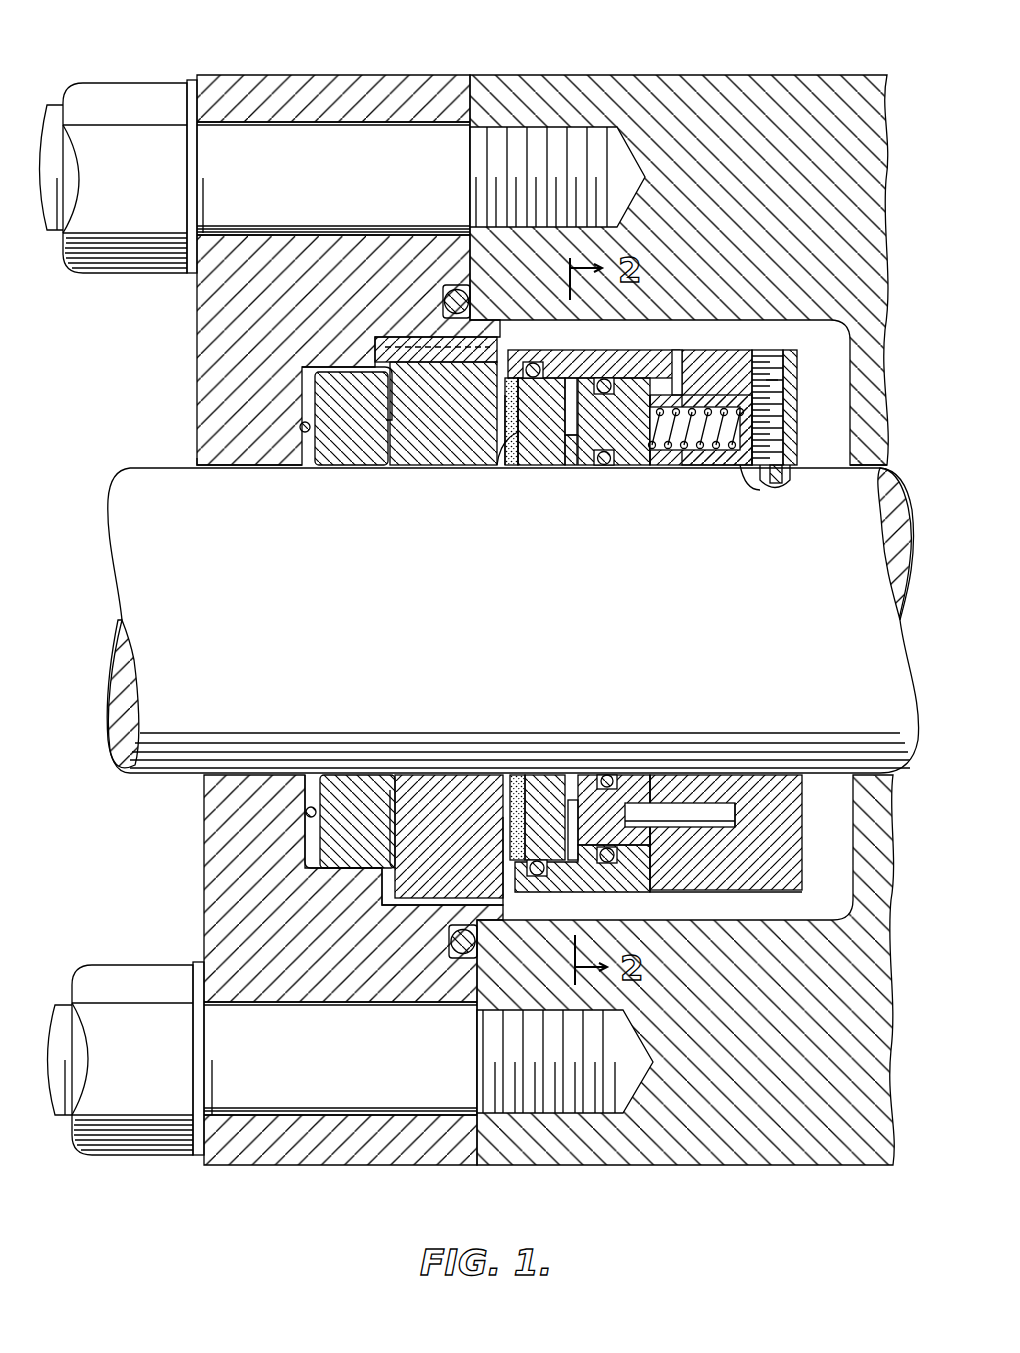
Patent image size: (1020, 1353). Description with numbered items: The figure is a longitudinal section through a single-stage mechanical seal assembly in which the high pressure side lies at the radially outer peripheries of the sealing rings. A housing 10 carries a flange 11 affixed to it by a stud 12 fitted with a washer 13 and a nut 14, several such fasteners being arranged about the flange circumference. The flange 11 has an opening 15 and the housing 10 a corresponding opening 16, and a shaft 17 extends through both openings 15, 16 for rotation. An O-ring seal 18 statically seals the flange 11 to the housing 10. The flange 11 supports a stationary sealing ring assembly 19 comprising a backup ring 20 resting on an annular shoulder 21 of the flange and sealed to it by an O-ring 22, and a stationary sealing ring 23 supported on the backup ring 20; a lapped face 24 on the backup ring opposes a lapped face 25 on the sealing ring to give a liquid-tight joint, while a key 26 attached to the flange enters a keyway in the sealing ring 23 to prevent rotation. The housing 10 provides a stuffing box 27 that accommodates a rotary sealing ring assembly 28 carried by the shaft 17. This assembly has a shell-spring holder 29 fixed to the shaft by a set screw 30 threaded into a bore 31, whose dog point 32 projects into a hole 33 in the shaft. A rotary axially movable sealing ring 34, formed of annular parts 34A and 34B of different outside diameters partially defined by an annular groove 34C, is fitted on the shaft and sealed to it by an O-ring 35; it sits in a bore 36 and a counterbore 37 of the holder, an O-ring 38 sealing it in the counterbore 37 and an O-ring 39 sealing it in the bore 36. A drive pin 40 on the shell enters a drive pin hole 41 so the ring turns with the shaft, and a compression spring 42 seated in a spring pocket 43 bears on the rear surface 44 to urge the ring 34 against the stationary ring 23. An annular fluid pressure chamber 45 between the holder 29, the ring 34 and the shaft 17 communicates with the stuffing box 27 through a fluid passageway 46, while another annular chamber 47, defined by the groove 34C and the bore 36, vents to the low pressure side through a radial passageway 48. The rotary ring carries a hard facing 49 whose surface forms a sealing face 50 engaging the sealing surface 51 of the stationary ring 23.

The housing 10 is at (752, 75).
The flange 11 is at (370, 80).
The stud 12 is at (337, 618).
The washer 13 is at (193, 80).
The nut 14 is at (143, 92).
The opening 15 is at (197, 462).
The opening 16 is at (888, 462).
The shaft 17 is at (115, 540).
The O-ring seal 18 is at (455, 288).
The stationary sealing ring assembly 19 is at (389, 494).
The backup ring 20 is at (355, 450).
The annular shoulder 21 is at (315, 462).
The O-ring 22 is at (300, 424).
The stationary sealing ring 23 is at (430, 450).
The lapped face 24 is at (398, 785).
The lapped face 25 is at (385, 785).
The key 26 is at (428, 342).
The stuffing box 27 is at (834, 354).
The rotary sealing ring assembly 28 is at (640, 496).
The shell-spring holder 29 is at (700, 365).
The set screw 30 is at (767, 362).
The bore 31 is at (780, 383).
The dog point 32 is at (790, 480).
The hole 33 is at (765, 490).
The rotary axially movable sealing ring 34 is at (556, 470).
The annular part 34A is at (518, 800).
The annular part 34B is at (620, 785).
The annular groove 34C is at (545, 800).
The O-ring 35 is at (606, 775).
The bore 36 is at (573, 862).
The counterbore 37 is at (672, 860).
The O-ring 38 is at (610, 862).
The O-ring 39 is at (537, 876).
The drive pin 40 is at (760, 785).
The drive pin hole 41 is at (678, 800).
The compression spring 42 is at (678, 470).
The spring pocket 43 is at (712, 450).
The rear surface 44 is at (650, 455).
The annular fluid pressure chamber 45 is at (715, 810).
The fluid passageway 46 is at (675, 365).
The annular chamber 47 is at (571, 380).
The radial passageway 48 is at (574, 468).
The hard facing 49 is at (505, 455).
The sealing face 50 is at (504, 445).
The sealing surface 51 is at (540, 455).